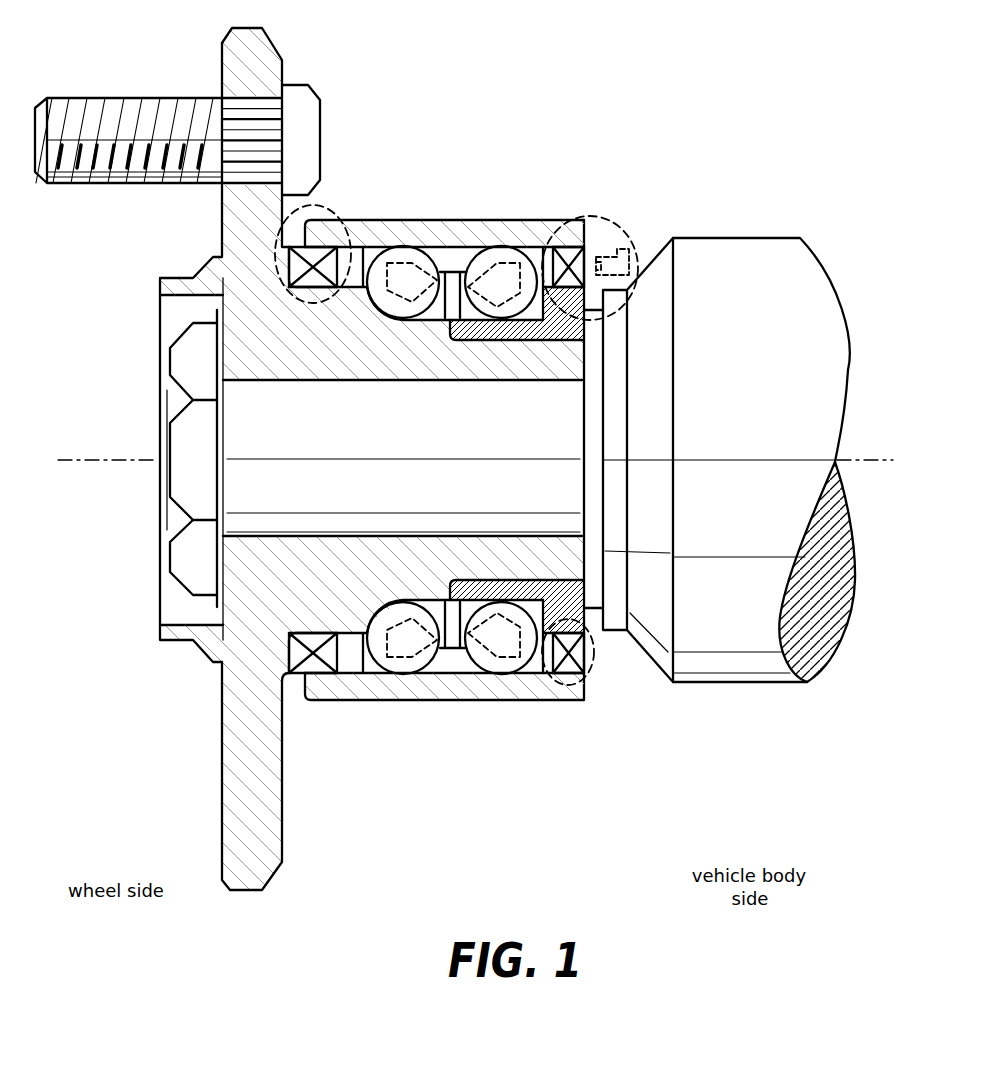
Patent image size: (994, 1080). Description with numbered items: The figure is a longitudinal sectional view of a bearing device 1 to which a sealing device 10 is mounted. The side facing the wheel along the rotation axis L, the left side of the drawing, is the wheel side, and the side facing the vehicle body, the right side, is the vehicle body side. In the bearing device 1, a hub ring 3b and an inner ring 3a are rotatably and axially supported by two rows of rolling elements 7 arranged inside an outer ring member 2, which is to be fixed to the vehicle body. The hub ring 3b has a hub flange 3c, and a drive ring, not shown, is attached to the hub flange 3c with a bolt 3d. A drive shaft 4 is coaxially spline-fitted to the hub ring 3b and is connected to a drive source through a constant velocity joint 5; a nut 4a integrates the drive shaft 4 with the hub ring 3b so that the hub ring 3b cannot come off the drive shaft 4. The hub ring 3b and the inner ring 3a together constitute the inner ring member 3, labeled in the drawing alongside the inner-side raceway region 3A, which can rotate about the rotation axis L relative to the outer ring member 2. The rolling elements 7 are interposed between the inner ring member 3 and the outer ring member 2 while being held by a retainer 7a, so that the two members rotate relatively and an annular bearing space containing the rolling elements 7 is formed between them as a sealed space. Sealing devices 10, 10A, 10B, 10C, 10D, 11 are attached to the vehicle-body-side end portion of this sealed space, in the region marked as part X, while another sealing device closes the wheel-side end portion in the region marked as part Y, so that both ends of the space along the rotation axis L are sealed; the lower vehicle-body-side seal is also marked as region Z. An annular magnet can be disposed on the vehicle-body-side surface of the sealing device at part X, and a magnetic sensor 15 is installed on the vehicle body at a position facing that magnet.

The bearing device 1 is at (598, 200).
The outer ring member 2 is at (505, 230).
The inner ring member 3 is at (352, 317).
The inner raceway surface 3A is at (455, 303).
The inner ring 3a is at (455, 593).
The hub ring 3b is at (247, 600).
The hub flange 3c is at (245, 868).
The bolt 3d is at (292, 100).
The drive shaft 4 is at (335, 398).
The nut 4a is at (197, 365).
The constant velocity joint 5 is at (738, 662).
The rolling elements 7 is at (493, 248).
The retainer 7a is at (560, 207).
The sealing device 10 is at (586, 634).
The sealing device 10A is at (313, 267).
The sealing device 10B is at (568, 267).
The sealing device 10C is at (313, 653).
The sealing device 10D is at (568, 653).
The sealing device 11 is at (328, 460).
The magnetic sensor 15 is at (625, 250).
The part X is at (612, 220).
The part Y is at (272, 255).
The enlarged detail region Z is at (587, 648).
The rotation axis L is at (872, 455).